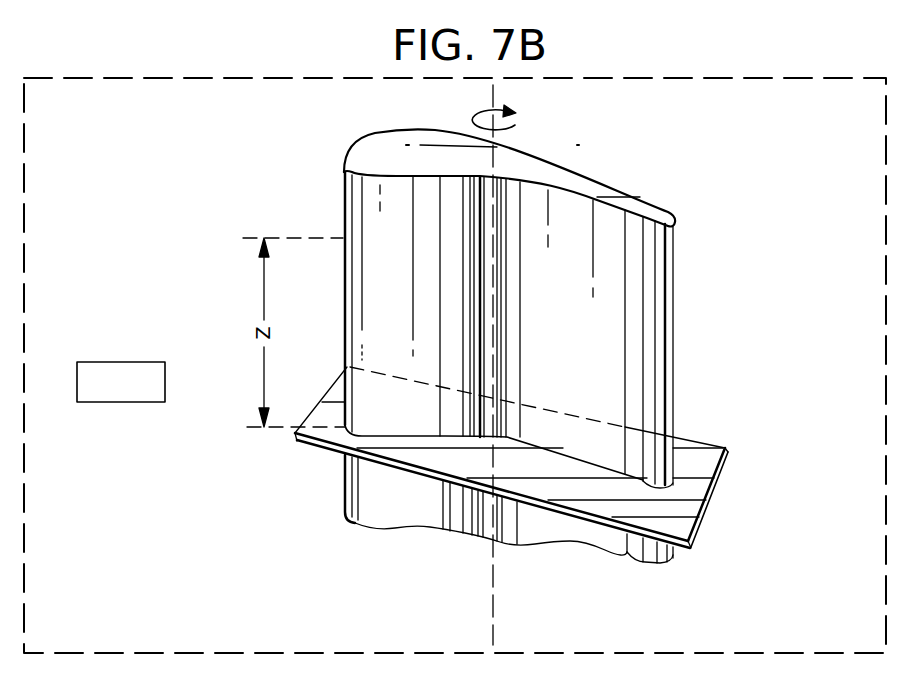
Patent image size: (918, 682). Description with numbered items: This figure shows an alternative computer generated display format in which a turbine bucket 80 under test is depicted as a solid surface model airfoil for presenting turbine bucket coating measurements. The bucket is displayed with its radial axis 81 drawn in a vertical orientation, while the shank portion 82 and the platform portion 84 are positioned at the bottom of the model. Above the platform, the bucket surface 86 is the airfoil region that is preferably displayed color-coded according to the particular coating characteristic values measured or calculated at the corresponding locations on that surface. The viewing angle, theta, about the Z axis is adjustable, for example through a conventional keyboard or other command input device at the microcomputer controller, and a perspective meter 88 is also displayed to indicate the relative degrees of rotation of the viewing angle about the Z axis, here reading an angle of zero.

The turbine bucket 80 is at (338, 574).
The radial axis 81 is at (493, 568).
The shank portion 82 is at (673, 557).
The platform portion 84 is at (707, 463).
The bucket surface 86 is at (633, 292).
The perspective meter 88 is at (112, 362).